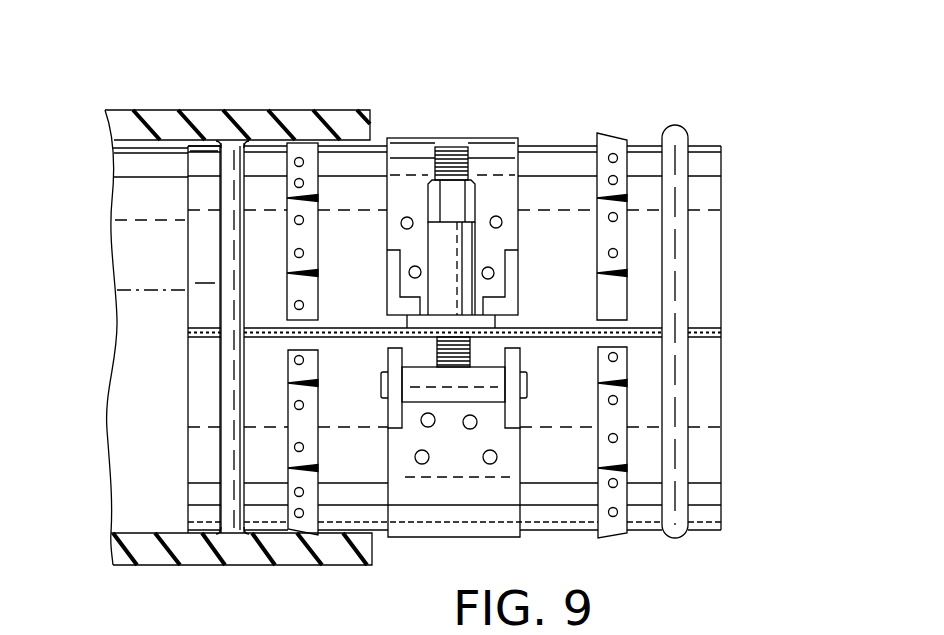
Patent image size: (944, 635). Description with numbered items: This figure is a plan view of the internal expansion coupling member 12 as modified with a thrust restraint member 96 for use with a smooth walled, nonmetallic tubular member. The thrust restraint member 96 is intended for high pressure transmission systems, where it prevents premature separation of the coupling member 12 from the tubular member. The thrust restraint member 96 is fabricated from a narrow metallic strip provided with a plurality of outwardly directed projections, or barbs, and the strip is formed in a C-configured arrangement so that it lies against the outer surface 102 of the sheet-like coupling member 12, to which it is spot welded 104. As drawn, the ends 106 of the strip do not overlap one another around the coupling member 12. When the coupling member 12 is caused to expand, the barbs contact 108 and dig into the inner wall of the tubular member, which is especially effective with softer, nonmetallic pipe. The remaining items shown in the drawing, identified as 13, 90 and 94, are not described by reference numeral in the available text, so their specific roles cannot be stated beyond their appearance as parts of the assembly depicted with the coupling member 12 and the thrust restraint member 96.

The coupling member 12 is at (552, 151).
The guide rod 13 is at (677, 123).
The support wall 90 is at (137, 146).
The post 94 is at (225, 143).
The thrust restraint member 96 is at (290, 378).
The outer surface 102 is at (583, 147).
The spot weld 104 is at (297, 253).
The ends of the strip 106 is at (315, 320).
The contact 108 is at (303, 143).